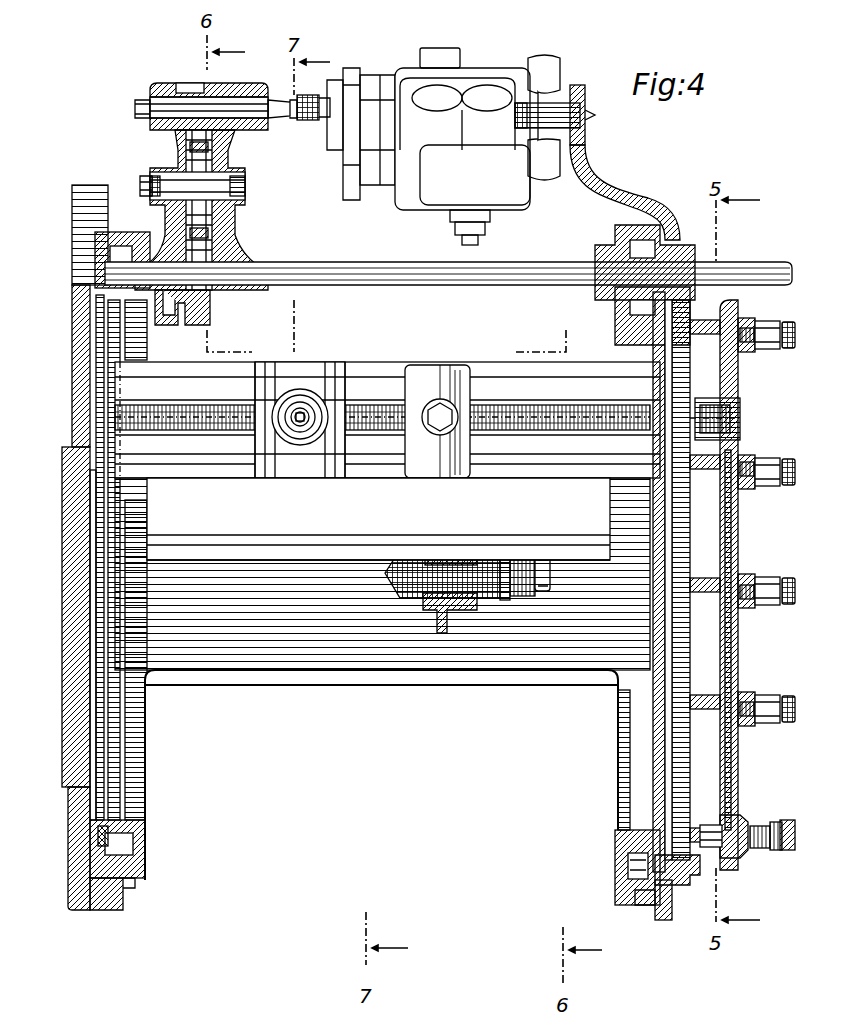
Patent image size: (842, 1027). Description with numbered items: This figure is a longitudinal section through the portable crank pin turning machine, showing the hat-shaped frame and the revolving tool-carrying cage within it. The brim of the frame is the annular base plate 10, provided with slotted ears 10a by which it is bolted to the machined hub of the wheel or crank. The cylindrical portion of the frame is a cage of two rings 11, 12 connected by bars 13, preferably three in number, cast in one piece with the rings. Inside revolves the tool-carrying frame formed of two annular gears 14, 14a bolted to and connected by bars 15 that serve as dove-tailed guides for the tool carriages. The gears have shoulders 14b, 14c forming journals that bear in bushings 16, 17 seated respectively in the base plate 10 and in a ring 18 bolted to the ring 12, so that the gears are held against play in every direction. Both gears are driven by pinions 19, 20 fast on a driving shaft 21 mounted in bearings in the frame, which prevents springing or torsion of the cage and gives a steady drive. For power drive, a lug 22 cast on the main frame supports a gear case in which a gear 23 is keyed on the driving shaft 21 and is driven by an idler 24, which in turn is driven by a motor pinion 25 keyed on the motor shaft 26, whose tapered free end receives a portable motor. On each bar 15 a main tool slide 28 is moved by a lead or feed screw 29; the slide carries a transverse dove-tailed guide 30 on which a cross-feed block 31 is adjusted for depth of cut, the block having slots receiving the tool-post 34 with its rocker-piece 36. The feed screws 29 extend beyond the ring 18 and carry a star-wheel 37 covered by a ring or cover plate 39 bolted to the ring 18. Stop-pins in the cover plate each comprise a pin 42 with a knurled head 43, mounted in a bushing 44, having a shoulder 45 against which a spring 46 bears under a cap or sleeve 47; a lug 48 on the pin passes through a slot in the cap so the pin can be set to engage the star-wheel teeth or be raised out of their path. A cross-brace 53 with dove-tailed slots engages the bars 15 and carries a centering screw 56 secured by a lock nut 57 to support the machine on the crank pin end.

The base plate 10 is at (75, 292).
The slotted ears 10a is at (78, 196).
The ring 11 is at (126, 889).
The ring 12 is at (616, 852).
The bars 13 is at (265, 640).
The annular gear 14 is at (150, 832).
The annular gear 14a is at (624, 815).
The shoulder 14b is at (80, 910).
The shoulder 14c is at (640, 893).
The bars 15 is at (600, 372).
The bushing 16 is at (90, 830).
The bushing 17 is at (686, 884).
The ring 18 is at (664, 920).
The pinion 19 is at (118, 245).
The pinion 20 is at (626, 236).
The driving shaft 21 is at (300, 272).
The lug 22 is at (160, 308).
The gear 23 is at (232, 240).
The idler 24 is at (200, 158).
The motor pinion 25 is at (180, 85).
The motor shaft 26 is at (150, 110).
The main tool slide 28 is at (262, 480).
The lead or feed screw 29 is at (582, 432).
The dove-tailed guide 30 is at (335, 478).
The cross-feed block 31 is at (330, 480).
The tool-post 34 is at (298, 442).
The rocker-piece 36 is at (305, 393).
The star-wheel 37 is at (700, 398).
The ring or cover plate 39 is at (740, 800).
The pin 42 is at (742, 332).
The knurled head 43 is at (790, 322).
The bushing 44 is at (752, 600).
The shoulder 45 is at (728, 850).
The spring 46 is at (748, 822).
The cap or sleeve 47 is at (770, 458).
The lug 48 is at (782, 826).
The cross-brace 53 is at (440, 508).
The centering screw 56 is at (545, 595).
The lock nut 57 is at (480, 548).